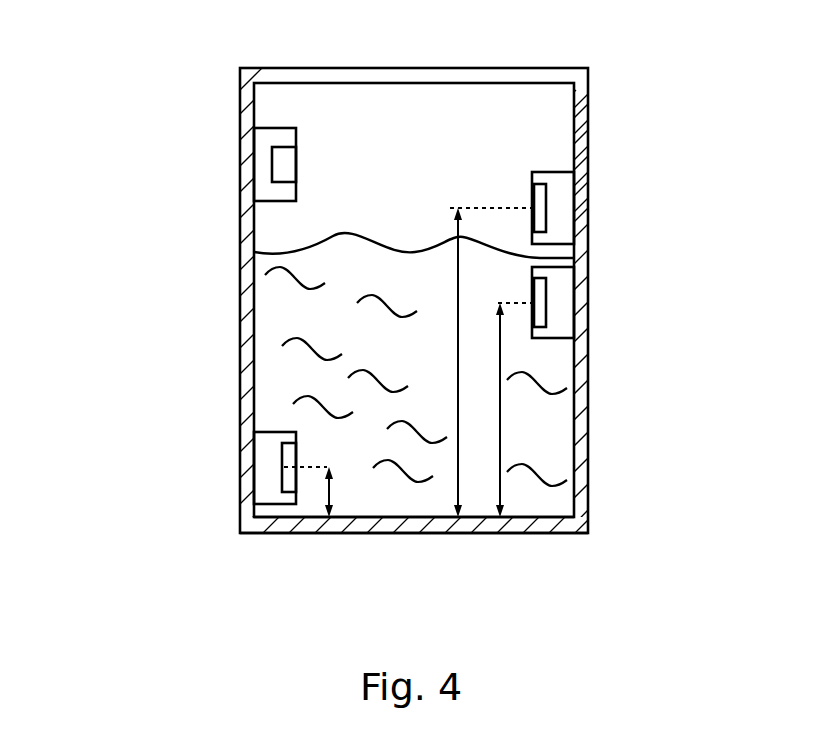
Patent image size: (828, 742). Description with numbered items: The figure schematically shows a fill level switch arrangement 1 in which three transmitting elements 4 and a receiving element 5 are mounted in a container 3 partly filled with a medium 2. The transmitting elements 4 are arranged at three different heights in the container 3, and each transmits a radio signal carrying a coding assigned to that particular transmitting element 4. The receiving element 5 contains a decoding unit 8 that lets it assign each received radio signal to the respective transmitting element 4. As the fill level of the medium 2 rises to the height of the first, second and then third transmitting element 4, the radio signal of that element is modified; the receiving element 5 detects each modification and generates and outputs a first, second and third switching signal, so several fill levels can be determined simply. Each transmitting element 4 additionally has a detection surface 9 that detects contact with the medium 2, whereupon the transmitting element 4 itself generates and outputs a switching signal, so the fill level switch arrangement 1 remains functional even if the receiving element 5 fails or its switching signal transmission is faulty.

The fill level switch arrangement 1 is at (107, 137).
The medium 2 is at (558, 497).
The container 3 is at (583, 131).
The transmitting element 4 is at (563, 183).
The receiving element 5 is at (266, 134).
The decoding unit 8 is at (290, 165).
The detection surface 9 is at (540, 217).